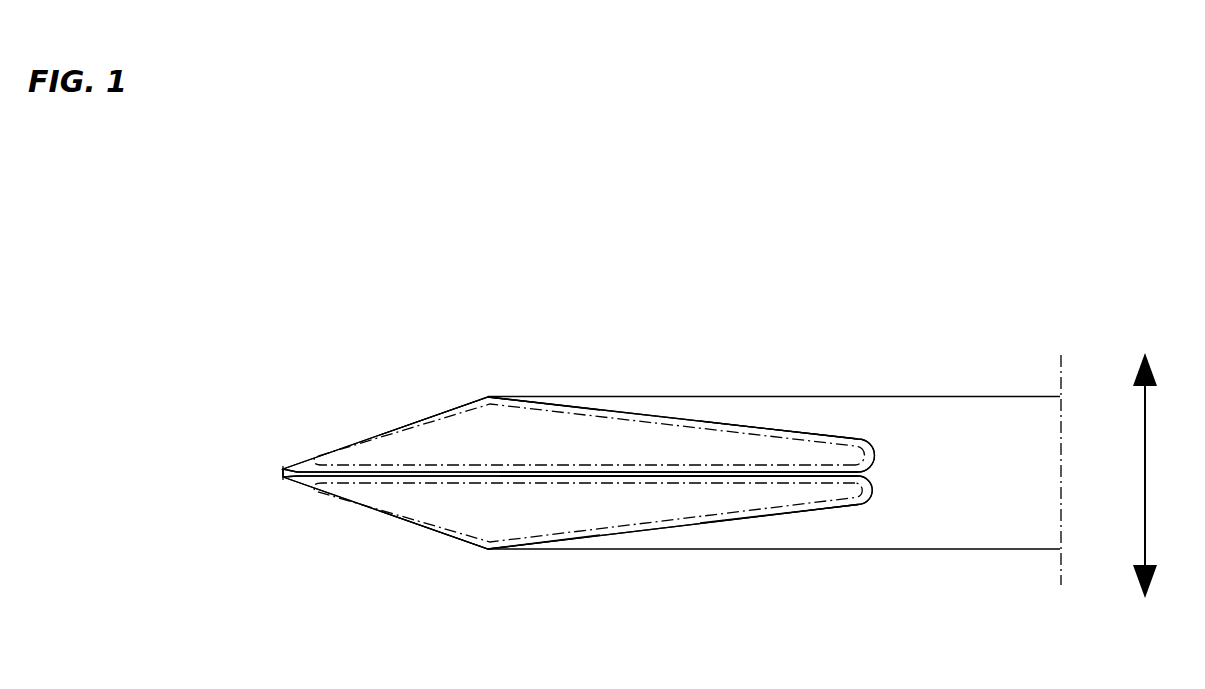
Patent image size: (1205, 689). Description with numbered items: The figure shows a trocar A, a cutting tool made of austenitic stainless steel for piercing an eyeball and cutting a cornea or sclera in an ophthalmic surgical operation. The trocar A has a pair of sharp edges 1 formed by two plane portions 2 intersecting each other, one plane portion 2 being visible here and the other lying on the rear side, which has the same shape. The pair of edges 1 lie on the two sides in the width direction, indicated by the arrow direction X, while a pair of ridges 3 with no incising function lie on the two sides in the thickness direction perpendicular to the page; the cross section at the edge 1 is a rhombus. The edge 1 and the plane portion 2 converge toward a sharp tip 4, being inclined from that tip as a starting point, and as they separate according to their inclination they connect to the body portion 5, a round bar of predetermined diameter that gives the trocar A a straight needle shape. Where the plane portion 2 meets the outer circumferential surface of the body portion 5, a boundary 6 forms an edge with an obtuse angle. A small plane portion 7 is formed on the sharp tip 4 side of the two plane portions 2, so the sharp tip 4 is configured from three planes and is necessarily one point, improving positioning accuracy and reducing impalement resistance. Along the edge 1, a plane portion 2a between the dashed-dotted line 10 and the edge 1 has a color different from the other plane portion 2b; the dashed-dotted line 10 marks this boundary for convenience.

The edge 1 is at (398, 428).
The plane portion 2 is at (577, 449).
The plane portion 2a is at (360, 443).
The plane portion 2b is at (451, 443).
The ridge 3 is at (530, 473).
The sharp tip 4 is at (283, 476).
The body portion 5 is at (947, 433).
The boundary 6 is at (795, 430).
The small plane portion 7 is at (287, 480).
The dashed-dotted line 10 is at (533, 412).
The trocar A is at (715, 365).
The arrow direction X is at (1126, 475).